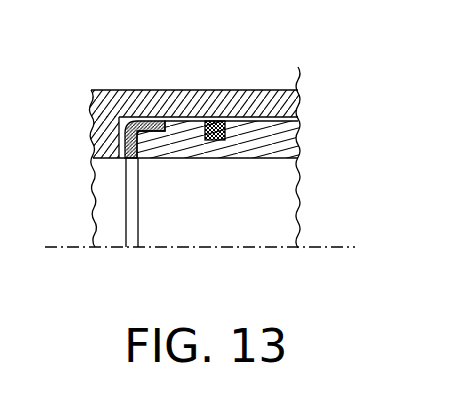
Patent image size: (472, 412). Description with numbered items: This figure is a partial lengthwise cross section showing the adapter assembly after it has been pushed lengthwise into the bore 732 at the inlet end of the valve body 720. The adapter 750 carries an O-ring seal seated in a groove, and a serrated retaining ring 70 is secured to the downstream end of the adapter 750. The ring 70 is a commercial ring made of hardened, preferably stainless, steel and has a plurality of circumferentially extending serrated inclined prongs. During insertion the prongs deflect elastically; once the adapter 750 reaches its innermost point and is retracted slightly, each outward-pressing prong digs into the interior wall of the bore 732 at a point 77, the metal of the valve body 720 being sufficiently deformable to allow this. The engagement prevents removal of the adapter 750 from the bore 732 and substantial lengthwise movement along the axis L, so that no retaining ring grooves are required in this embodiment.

The valve body 720 is at (252, 90).
The serrated retaining ring 70 is at (119, 158).
The adapter 750 is at (260, 159).
The point 77 is at (153, 120).
The bore 732 is at (116, 238).
The longitudinal axis L is at (325, 249).